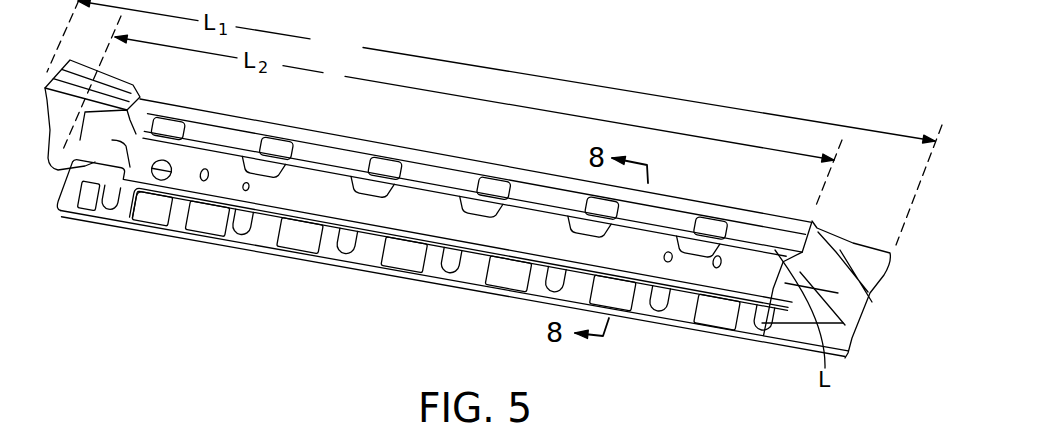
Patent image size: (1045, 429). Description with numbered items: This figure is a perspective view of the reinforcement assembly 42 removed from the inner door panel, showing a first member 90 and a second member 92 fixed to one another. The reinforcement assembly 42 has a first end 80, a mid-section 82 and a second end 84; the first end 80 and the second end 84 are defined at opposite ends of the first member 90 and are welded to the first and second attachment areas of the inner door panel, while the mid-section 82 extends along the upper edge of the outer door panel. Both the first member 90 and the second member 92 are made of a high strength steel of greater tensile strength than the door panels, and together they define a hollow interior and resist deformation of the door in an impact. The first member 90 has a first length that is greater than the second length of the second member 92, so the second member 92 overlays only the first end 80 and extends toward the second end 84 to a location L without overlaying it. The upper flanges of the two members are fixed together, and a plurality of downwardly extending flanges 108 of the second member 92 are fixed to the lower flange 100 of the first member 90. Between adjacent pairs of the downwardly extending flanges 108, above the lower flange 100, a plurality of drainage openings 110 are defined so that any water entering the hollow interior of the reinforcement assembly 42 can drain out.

The reinforcement assembly 42 is at (330, 112).
The first end 80 is at (86, 82).
The mid-section 82 is at (457, 155).
The second end 84 is at (857, 243).
The first member 90 is at (710, 197).
The second member 92 is at (305, 190).
The lower flange 100 is at (476, 270).
The downwardly extending flanges 108 is at (241, 236).
The drainage openings 110 is at (150, 197).